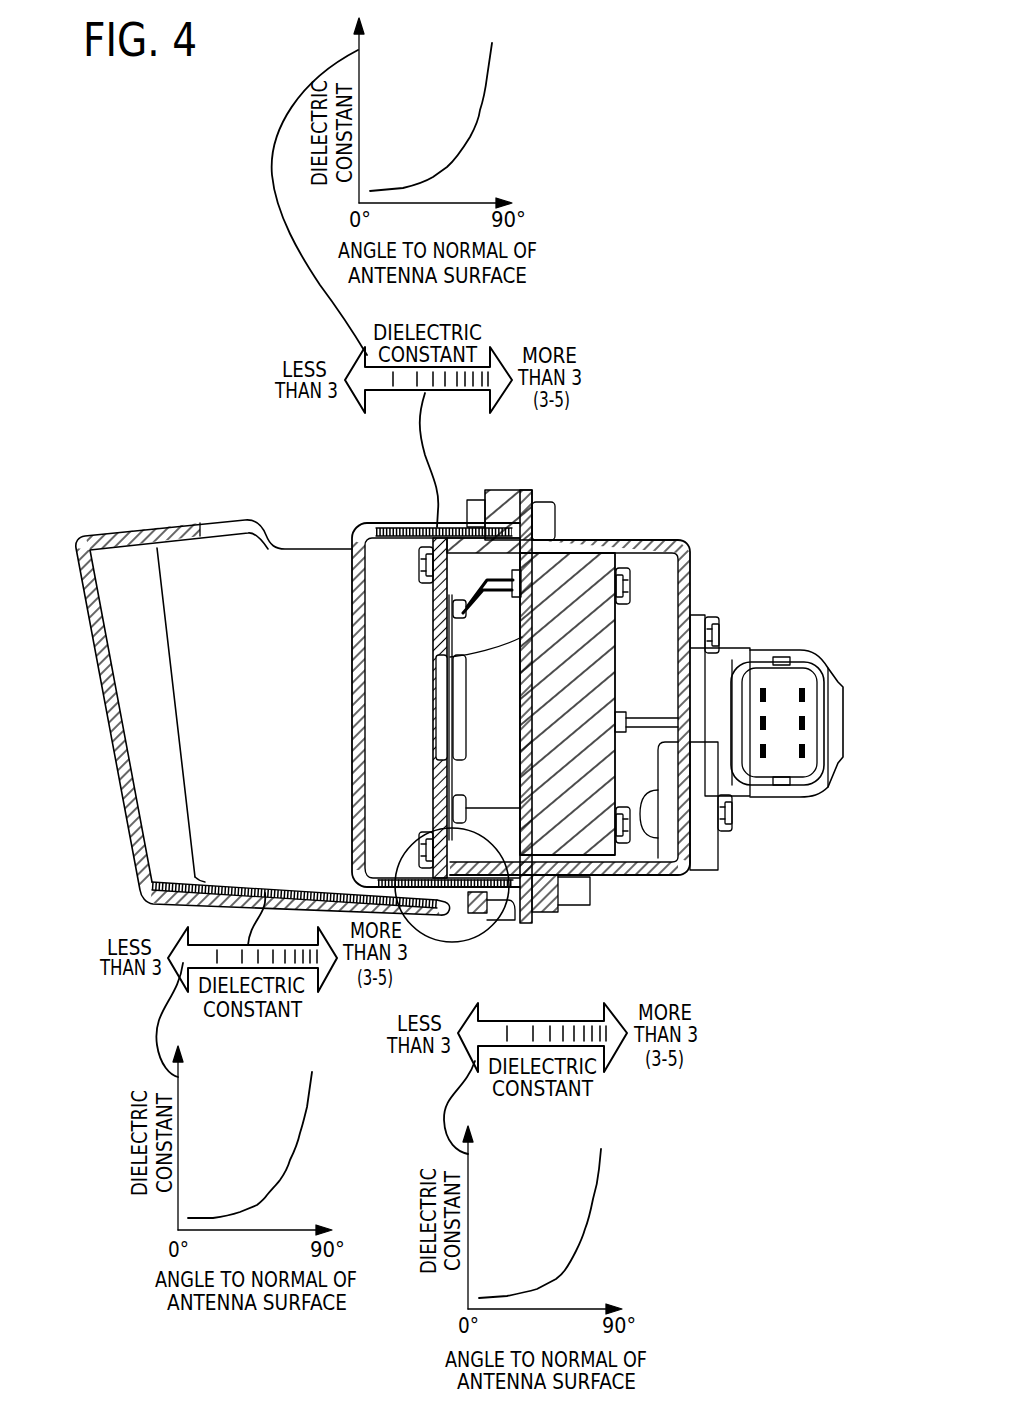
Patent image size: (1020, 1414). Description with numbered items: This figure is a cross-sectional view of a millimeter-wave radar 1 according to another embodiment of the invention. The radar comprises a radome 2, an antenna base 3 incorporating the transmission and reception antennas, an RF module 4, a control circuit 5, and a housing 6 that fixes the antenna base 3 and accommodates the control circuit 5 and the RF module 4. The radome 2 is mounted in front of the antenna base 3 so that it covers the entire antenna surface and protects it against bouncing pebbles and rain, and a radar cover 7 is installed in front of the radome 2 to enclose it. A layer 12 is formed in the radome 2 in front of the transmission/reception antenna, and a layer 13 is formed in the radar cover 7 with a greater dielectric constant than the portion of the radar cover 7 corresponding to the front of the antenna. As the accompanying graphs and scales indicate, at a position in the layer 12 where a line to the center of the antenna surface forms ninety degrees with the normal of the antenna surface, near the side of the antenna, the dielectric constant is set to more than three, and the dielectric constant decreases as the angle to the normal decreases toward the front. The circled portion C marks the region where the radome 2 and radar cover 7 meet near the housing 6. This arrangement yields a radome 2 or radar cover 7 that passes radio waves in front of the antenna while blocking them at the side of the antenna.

The antenna device 1 is at (305, 458).
The radome 2 is at (421, 674).
The antenna base 3 is at (432, 613).
The RF module 4 is at (562, 565).
The control circuit 5 is at (617, 632).
The housing 6 is at (657, 875).
The radar cover 7 is at (263, 700).
The layer 12 is at (418, 532).
The layer 13 is at (167, 897).
The detail portion C is at (513, 1020).